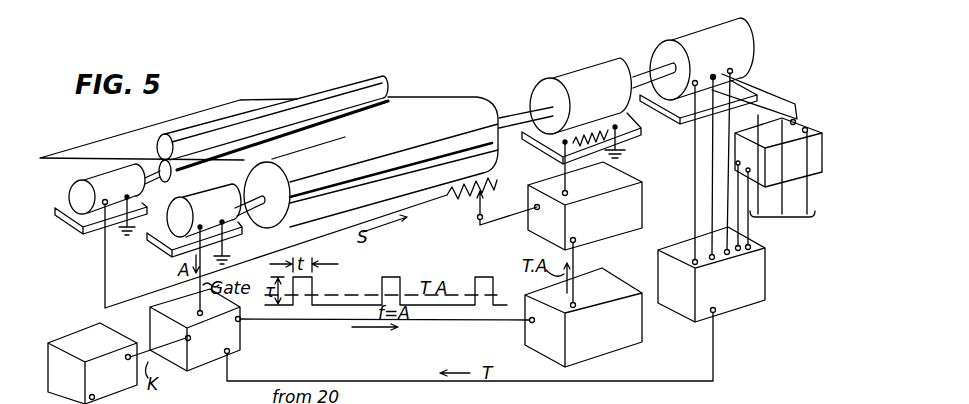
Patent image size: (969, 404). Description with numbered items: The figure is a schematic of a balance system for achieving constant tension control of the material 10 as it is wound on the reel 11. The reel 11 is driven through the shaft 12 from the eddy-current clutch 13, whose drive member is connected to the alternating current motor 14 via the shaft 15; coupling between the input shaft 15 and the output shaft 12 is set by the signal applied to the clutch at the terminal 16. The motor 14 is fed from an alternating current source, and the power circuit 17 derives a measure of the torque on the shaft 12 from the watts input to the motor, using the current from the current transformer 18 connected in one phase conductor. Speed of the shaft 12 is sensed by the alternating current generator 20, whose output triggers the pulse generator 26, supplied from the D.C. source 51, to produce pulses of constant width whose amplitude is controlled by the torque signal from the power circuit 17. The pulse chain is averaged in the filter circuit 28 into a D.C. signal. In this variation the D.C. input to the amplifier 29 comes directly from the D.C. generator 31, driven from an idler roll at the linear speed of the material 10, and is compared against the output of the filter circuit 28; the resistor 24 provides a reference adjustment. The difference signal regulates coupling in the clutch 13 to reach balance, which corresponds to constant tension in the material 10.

The material 10 is at (408, 105).
The reel 11 is at (484, 158).
The shaft 12 is at (522, 112).
The eddy-current clutch 13 is at (580, 75).
The motor 14 is at (742, 38).
The shaft 15 is at (641, 70).
The terminal 16 is at (556, 168).
The power circuit 17 is at (762, 291).
The current transformer 18 is at (802, 120).
The alternating current generator 20 is at (238, 223).
The resistor 24 is at (474, 198).
The pulse generator 26 is at (245, 352).
The filter circuit 28 is at (608, 288).
The amplifier 29 is at (630, 178).
The D.C. generator 31 is at (70, 197).
The D.C. source 51 is at (72, 334).